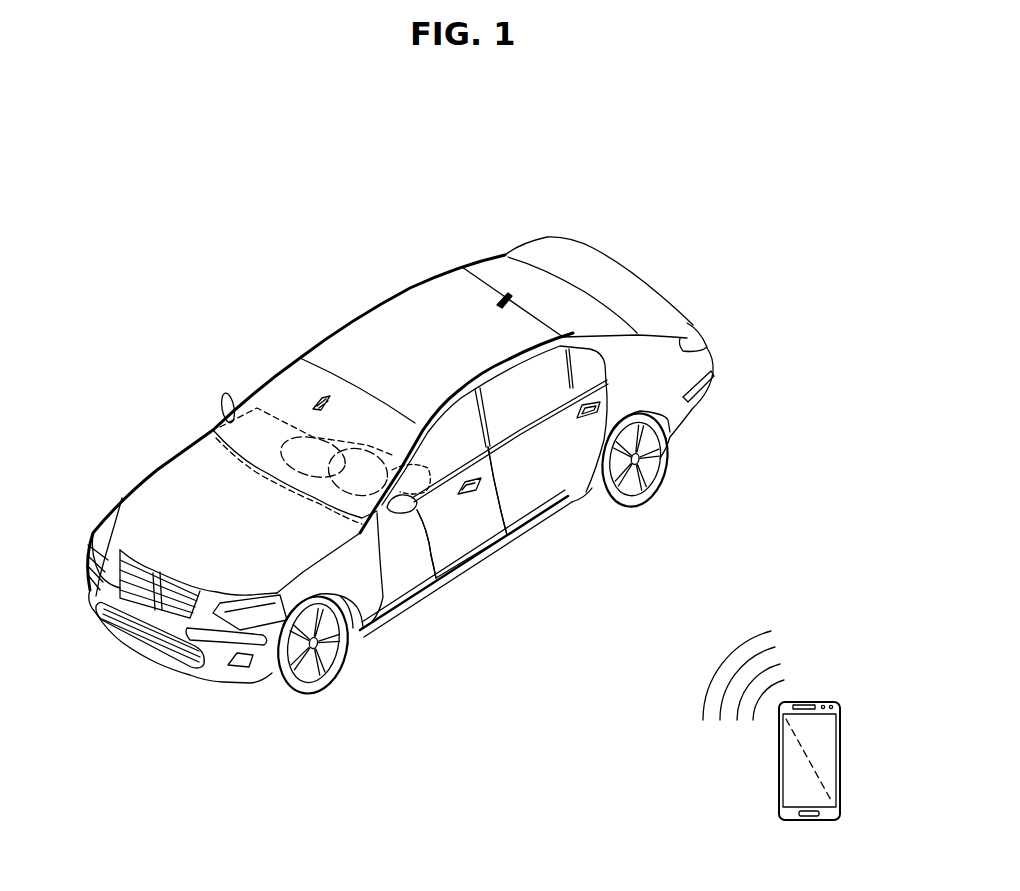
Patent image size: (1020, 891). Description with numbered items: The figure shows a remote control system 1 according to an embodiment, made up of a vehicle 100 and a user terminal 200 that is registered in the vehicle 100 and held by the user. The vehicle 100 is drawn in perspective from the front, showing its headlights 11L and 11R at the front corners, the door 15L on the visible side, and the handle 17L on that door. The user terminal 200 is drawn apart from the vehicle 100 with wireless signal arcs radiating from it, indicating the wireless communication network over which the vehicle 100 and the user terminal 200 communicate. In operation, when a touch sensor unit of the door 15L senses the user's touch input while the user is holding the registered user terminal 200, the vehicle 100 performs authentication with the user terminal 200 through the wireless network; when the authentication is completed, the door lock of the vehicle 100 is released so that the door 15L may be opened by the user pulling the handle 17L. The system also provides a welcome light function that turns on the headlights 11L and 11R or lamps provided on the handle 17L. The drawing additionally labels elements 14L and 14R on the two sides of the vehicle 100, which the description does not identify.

The remote control system 1 is at (760, 150).
The vehicle 100 is at (421, 285).
The user terminal 200 is at (806, 701).
The headlight 11L is at (257, 610).
The headlight 11R is at (98, 527).
The left side mirror 14L is at (418, 508).
The right side mirror 14R is at (221, 402).
The door 15L is at (457, 532).
The handle 17L is at (480, 480).